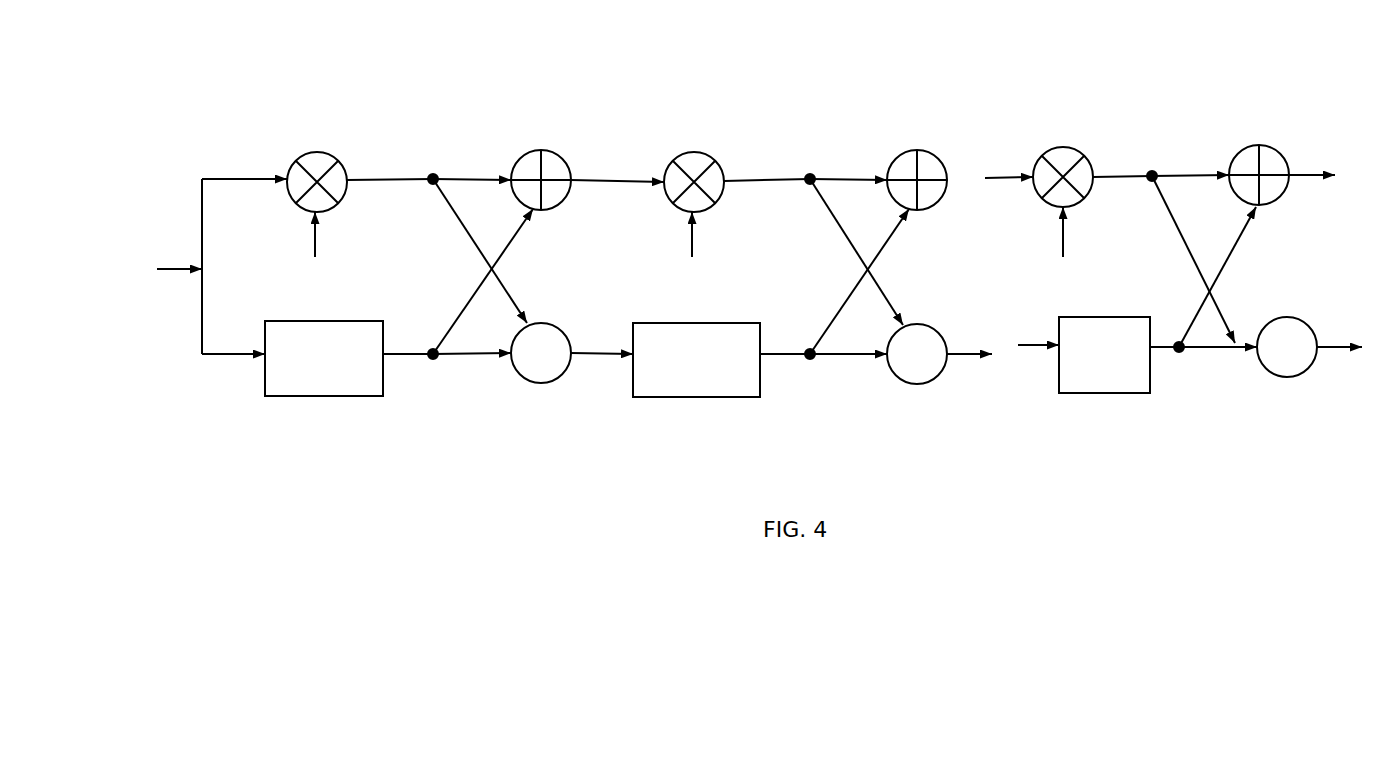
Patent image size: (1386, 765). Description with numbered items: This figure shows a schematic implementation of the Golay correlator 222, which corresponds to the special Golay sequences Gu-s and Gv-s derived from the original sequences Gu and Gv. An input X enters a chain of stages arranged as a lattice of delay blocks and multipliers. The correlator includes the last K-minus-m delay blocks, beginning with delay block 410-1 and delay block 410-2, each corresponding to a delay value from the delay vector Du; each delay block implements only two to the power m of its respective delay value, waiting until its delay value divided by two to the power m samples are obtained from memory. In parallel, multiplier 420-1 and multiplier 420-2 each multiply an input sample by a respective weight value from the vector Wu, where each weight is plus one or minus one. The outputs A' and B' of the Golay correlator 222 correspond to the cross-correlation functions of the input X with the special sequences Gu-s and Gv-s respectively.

The Golay correlator 222 is at (948, 63).
The multiplier 420-1 is at (302, 150).
The delay block 410-1 is at (358, 320).
The multiplier 420-2 is at (679, 150).
The delay block 410-2 is at (735, 322).